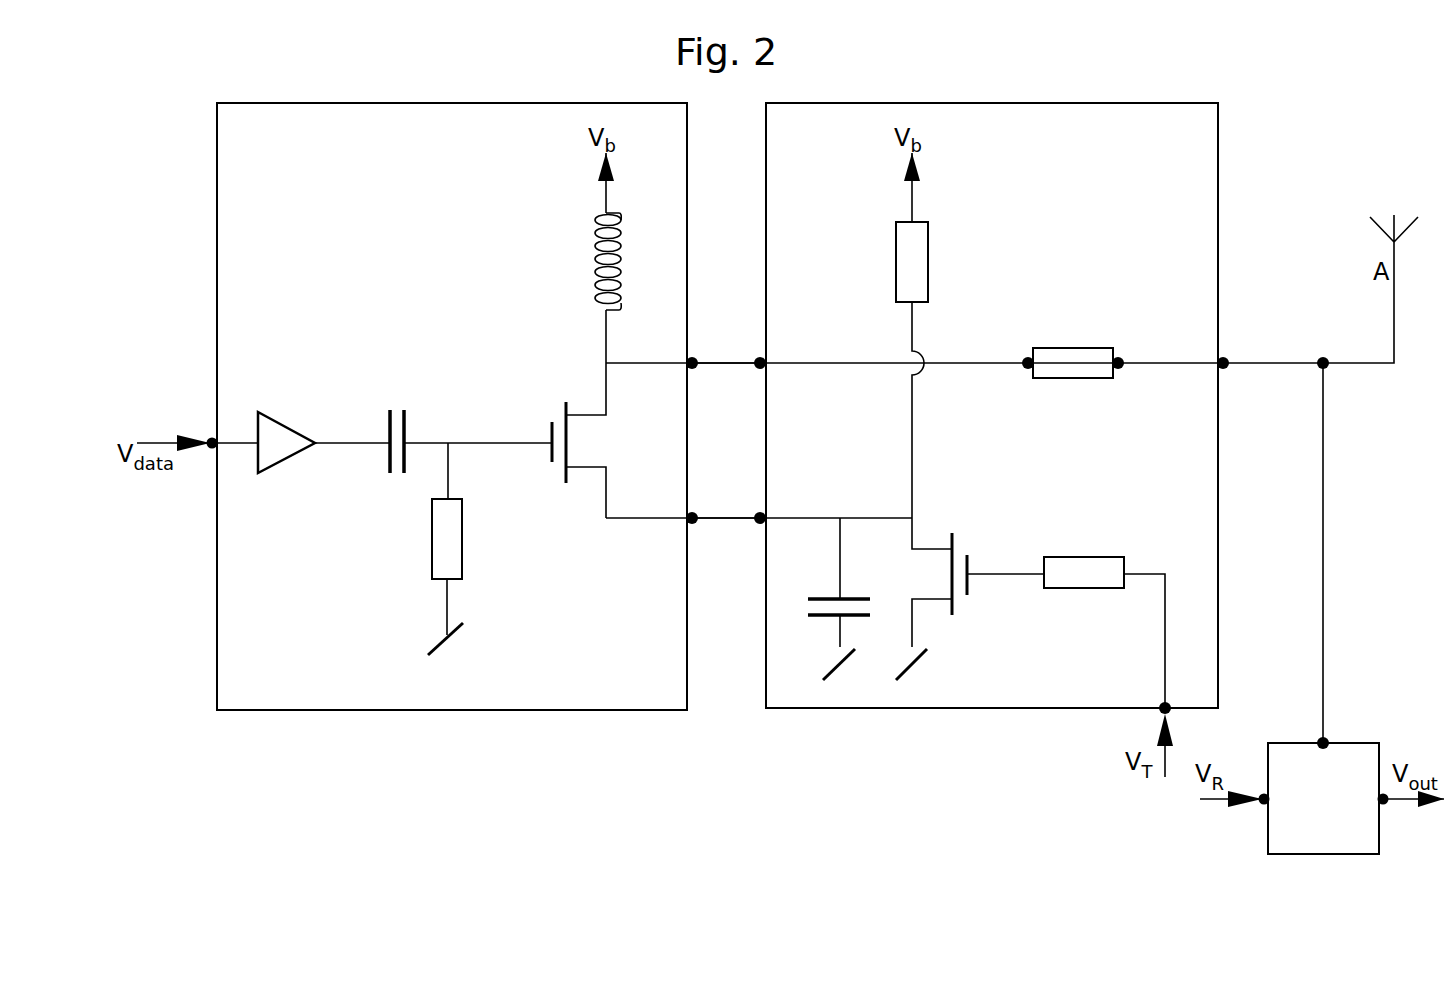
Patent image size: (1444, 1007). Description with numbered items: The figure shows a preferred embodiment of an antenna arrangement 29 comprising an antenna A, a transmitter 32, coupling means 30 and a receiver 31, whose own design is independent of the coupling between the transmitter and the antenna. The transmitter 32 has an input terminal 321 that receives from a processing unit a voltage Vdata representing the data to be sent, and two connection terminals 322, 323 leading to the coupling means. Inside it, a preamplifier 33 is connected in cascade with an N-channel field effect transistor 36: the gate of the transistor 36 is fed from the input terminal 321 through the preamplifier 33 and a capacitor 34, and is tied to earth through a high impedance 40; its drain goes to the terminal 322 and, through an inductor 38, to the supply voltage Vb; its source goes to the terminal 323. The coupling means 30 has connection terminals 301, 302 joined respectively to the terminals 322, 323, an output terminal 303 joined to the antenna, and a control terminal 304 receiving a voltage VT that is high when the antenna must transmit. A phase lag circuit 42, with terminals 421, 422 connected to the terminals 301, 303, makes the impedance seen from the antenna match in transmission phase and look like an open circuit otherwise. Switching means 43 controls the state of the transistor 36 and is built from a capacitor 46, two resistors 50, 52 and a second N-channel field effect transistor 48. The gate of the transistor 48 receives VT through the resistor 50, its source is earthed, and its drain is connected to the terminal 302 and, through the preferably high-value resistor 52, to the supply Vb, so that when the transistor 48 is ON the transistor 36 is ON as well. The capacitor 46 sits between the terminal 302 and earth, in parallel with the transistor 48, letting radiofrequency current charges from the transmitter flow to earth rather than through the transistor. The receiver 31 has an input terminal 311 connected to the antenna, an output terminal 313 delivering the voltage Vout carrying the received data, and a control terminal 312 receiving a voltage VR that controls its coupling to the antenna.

The antenna arrangement 29 is at (668, 775).
The coupling means 30 is at (878, 743).
The receiver 31 is at (1325, 845).
The transmitter 32 is at (342, 743).
The preamplifier 33 is at (277, 432).
The capacitor 34 is at (378, 436).
The field effect transistor 36 is at (578, 442).
The inductor 38 is at (622, 264).
The high impedance 40 is at (455, 550).
The phase lag circuit 42 is at (1065, 355).
The switching means 43 is at (1038, 588).
The capacitor 46 is at (836, 591).
The field effect transistor 48 is at (971, 564).
The resistor 50 is at (1077, 565).
The resistor 52 is at (928, 264).
The connection terminal 301 is at (755, 366).
The connection terminal 302 is at (755, 521).
The output terminal 303 is at (1228, 360).
The control terminal 304 is at (1158, 711).
The input terminal 311 is at (1328, 740).
The control terminal 312 is at (1260, 805).
The output terminal 313 is at (1387, 805).
The input terminal 321 is at (210, 440).
The connection terminal 322 is at (697, 360).
The connection terminal 323 is at (697, 515).
The terminal 421 is at (1028, 368).
The terminal 422 is at (1118, 368).